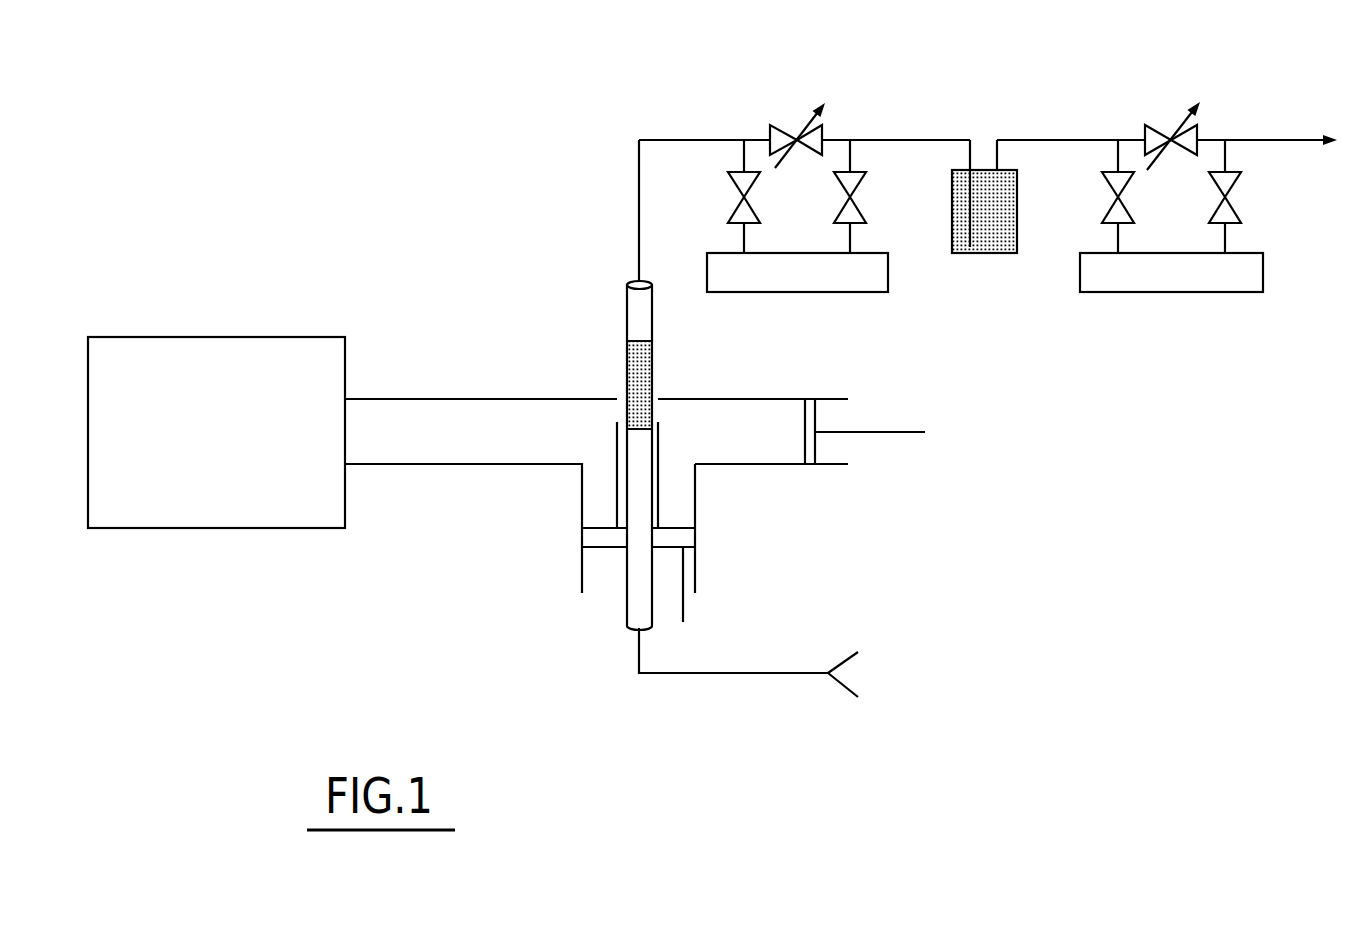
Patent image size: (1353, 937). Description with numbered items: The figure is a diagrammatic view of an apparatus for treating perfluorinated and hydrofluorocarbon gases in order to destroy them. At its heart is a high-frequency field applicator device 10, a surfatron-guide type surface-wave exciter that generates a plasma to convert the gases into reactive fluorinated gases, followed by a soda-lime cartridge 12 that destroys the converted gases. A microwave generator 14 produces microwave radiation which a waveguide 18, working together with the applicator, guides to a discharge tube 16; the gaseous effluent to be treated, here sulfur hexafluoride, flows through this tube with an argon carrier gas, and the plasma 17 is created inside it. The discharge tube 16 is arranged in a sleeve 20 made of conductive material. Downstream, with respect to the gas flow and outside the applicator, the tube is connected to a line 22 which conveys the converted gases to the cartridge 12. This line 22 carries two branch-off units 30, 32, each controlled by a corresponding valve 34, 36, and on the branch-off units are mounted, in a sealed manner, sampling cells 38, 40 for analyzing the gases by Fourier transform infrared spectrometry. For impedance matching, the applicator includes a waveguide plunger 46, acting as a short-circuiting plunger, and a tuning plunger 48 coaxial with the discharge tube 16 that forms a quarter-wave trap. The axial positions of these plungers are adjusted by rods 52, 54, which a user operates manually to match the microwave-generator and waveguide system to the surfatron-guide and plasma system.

The high-frequency field applicator device 10 is at (550, 488).
The soda-lime cartridge 12 is at (978, 128).
The microwave generator 14 is at (233, 540).
The discharge tube 16 is at (636, 595).
The plasma 17 is at (613, 378).
The waveguide 18 is at (505, 398).
The sleeve 20 is at (658, 492).
The line 22 is at (637, 245).
The branch-off unit 30 is at (900, 290).
The branch-off unit 32 is at (1275, 282).
The valve 34 is at (822, 128).
The valve 36 is at (1165, 125).
The sampling cell 38 is at (808, 296).
The sampling cell 40 is at (1157, 293).
The waveguide plunger 46 is at (815, 447).
The tuning plunger 48 is at (682, 538).
The rod 52 is at (880, 432).
The rod 54 is at (683, 618).